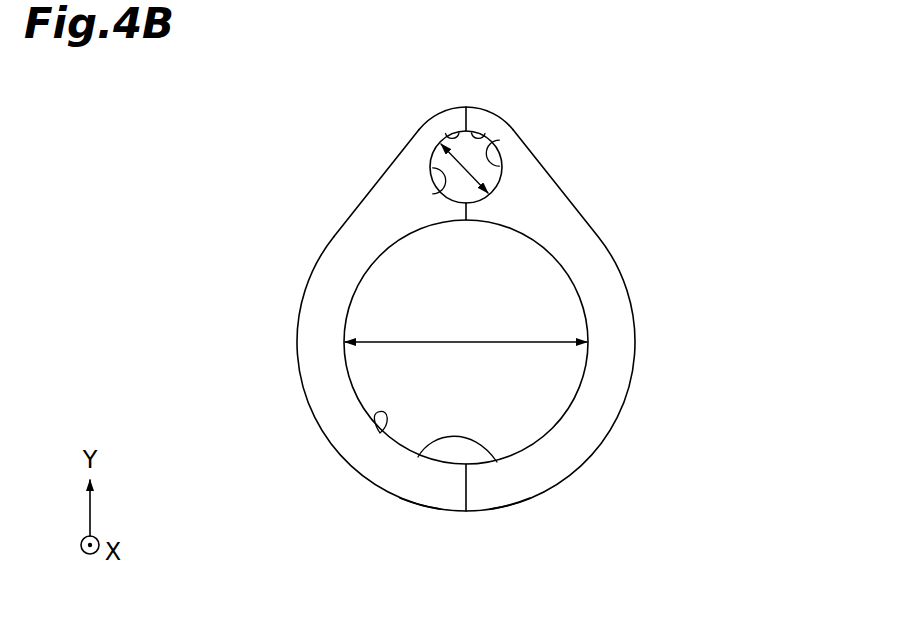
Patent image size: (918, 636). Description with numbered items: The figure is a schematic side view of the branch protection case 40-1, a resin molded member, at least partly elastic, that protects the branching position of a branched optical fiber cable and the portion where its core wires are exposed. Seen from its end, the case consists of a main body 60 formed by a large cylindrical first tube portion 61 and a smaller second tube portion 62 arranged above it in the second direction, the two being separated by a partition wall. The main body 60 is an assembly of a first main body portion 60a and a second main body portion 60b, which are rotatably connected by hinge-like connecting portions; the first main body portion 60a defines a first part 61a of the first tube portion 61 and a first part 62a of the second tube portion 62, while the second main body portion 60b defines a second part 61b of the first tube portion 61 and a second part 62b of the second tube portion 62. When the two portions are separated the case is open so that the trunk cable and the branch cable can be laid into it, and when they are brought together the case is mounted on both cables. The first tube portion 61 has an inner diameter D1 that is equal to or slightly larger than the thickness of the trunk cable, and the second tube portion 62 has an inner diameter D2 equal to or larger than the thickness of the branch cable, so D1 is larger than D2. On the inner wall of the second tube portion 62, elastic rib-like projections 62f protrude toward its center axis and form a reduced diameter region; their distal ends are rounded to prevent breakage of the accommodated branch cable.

The branch protection case 40-1 is at (656, 166).
The main body 60 is at (466, 369).
The first main body portion 60a is at (420, 509).
The second main body portion 60b is at (504, 530).
The first tube portion 61 is at (432, 396).
The first part of the first tube portion 61a is at (380, 433).
The second part of the first tube portion 61b is at (440, 444).
The second tube portion 62 is at (474, 111).
The first part of the second tube portion 62a is at (457, 130).
The second part of the second tube portion 62b is at (481, 132).
The projection 62f is at (428, 177).
The inner diameter of the first tube portion D1 is at (466, 327).
The inner diameter of the second tube portion D2 is at (474, 171).